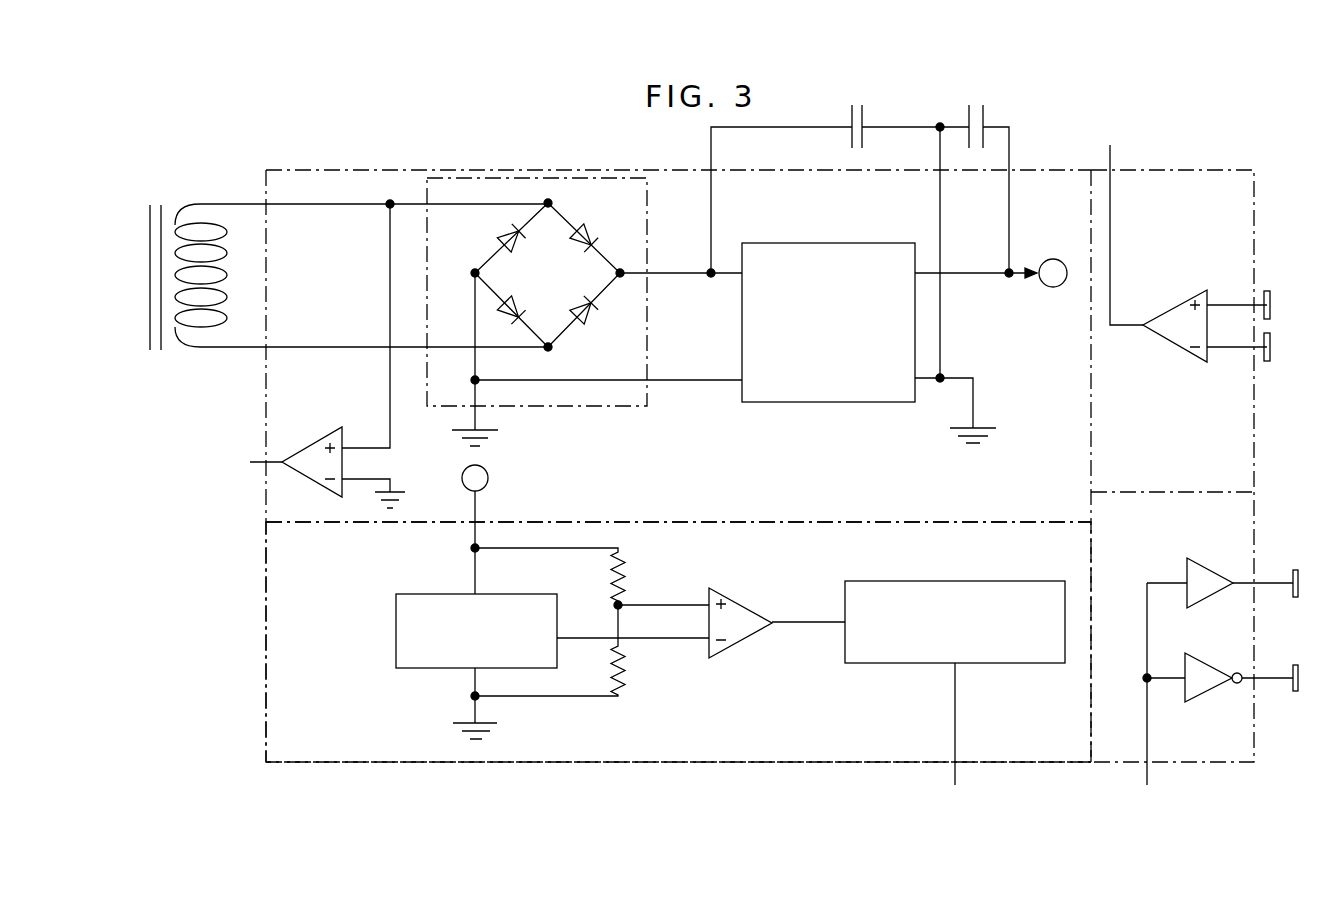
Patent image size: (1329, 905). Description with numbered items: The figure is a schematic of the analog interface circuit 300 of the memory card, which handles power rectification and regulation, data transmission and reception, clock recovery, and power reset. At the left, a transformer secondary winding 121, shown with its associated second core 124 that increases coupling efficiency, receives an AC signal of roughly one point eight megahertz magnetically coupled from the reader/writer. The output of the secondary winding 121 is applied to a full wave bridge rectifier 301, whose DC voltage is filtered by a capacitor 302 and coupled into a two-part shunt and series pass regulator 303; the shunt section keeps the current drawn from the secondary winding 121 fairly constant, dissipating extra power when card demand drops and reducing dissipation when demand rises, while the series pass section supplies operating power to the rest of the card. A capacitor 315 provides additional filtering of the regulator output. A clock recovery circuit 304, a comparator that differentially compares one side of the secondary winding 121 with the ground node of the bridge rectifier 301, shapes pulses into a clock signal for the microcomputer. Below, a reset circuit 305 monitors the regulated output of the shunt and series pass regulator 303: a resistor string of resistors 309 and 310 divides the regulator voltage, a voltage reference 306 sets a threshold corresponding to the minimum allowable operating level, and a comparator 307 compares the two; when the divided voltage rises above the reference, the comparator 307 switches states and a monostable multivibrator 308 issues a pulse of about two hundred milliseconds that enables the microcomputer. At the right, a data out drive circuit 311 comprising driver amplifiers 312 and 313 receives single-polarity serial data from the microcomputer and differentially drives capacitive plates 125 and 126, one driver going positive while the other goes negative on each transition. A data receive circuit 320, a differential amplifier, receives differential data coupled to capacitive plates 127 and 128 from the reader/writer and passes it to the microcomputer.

The secondary winding 121 is at (185, 349).
The second core 124 is at (162, 207).
The capacitive plate 125 is at (1292, 695).
The capacitive plate 126 is at (1292, 592).
The capacitive plate 127 is at (1272, 310).
The capacitive plate 128 is at (1272, 340).
The analog interface circuit 300 is at (600, 164).
The full wave bridge rectifier 301 is at (647, 209).
The capacitor 302 is at (865, 127).
The shunt and series pass regulator 303 is at (792, 243).
The clock recovery circuit 304 is at (300, 473).
The reset circuit 305 is at (700, 530).
The voltage reference 306 is at (447, 594).
The comparator 307 is at (763, 600).
The monostable multivibrator 308 is at (973, 581).
The resistor 309 is at (630, 582).
The resistor 310 is at (630, 690).
The data out drive circuit 311 is at (1199, 498).
The driver amplifier 312 is at (1240, 565).
The driver amplifier 313 is at (1242, 668).
The capacitor 315 is at (986, 127).
The data receive circuit 320 is at (1155, 333).